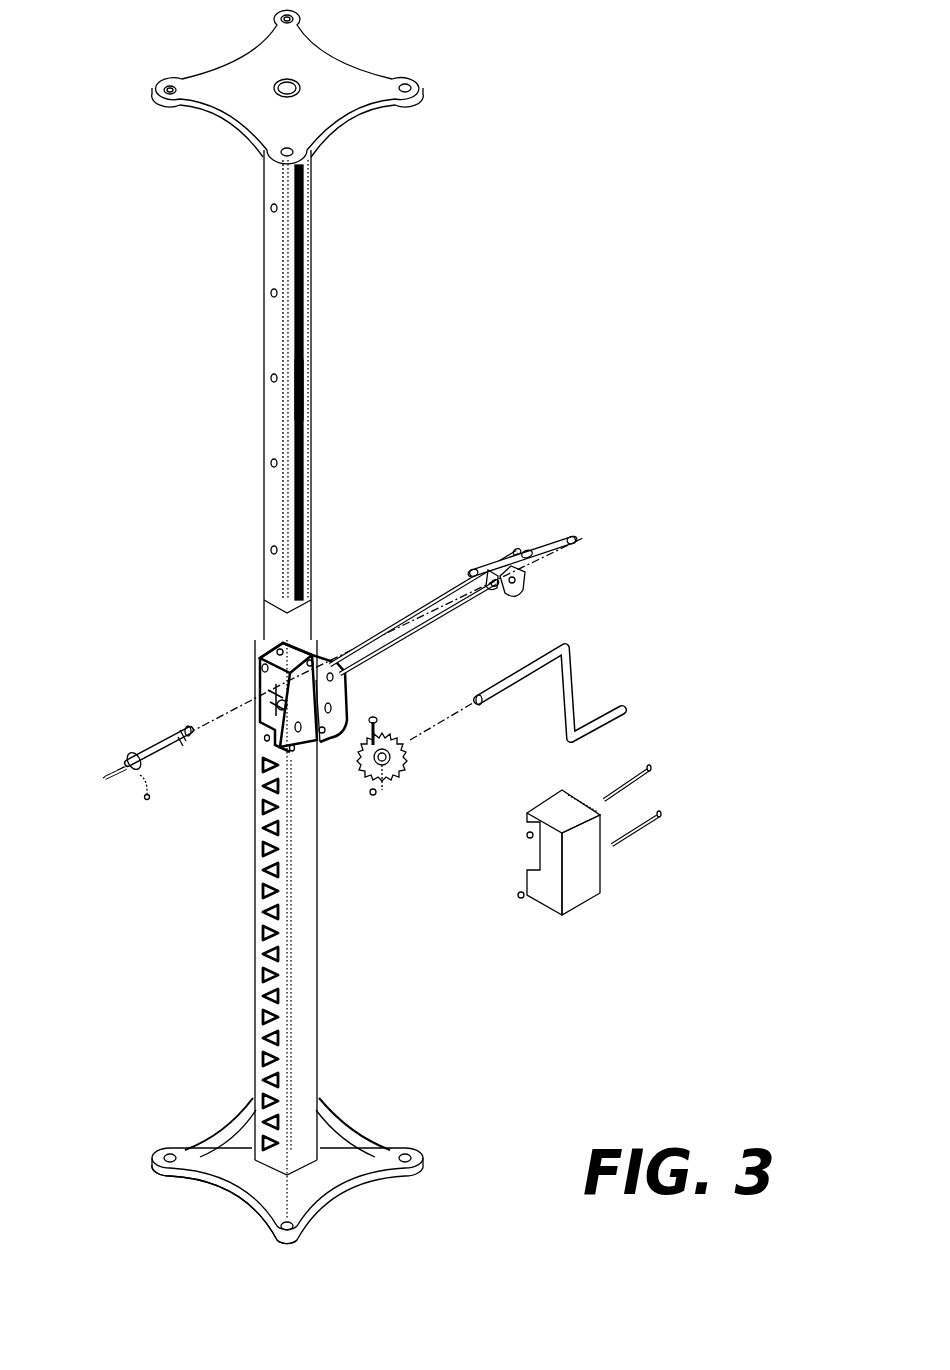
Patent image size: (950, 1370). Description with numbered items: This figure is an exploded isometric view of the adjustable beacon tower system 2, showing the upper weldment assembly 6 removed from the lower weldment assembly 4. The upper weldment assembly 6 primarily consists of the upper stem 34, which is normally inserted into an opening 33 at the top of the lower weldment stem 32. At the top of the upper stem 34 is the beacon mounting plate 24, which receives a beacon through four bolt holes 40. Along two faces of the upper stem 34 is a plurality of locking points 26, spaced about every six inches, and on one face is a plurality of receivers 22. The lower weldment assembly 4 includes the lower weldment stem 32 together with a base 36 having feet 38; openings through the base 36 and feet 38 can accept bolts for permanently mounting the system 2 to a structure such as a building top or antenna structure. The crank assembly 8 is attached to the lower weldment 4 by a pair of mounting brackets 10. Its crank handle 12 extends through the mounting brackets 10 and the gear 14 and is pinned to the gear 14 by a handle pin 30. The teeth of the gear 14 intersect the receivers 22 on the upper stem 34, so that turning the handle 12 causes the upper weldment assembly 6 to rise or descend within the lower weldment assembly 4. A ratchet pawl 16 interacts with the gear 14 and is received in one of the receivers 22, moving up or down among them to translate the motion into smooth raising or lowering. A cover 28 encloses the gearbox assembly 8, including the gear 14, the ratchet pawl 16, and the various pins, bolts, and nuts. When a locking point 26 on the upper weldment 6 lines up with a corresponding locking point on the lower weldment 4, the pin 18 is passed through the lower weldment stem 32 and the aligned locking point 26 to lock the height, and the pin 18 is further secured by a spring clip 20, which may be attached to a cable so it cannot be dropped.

The adjustable beacon tower system 2 is at (751, 56).
The lower weldment assembly 4 is at (346, 915).
The upper weldment assembly 6 is at (400, 158).
The crank assembly 8 is at (626, 619).
The mounting brackets 10 is at (283, 720).
The crank handle 12 is at (626, 713).
The gear 14 is at (402, 764).
The ratchet pawl 16 is at (527, 580).
The pin 18 is at (152, 750).
The spring clip 20 is at (112, 770).
The receivers 22 is at (298, 375).
The beacon mounting plate 24 is at (305, 73).
The locking points 26 is at (276, 460).
The cover 28 is at (565, 805).
The handle pin 30 is at (375, 716).
The lower weldment stem 32 is at (318, 977).
The opening 33 is at (266, 642).
The upper stem 34 is at (264, 250).
The base 36 is at (185, 1148).
The feet 38 is at (180, 1178).
The bolt holes 40 is at (175, 88).